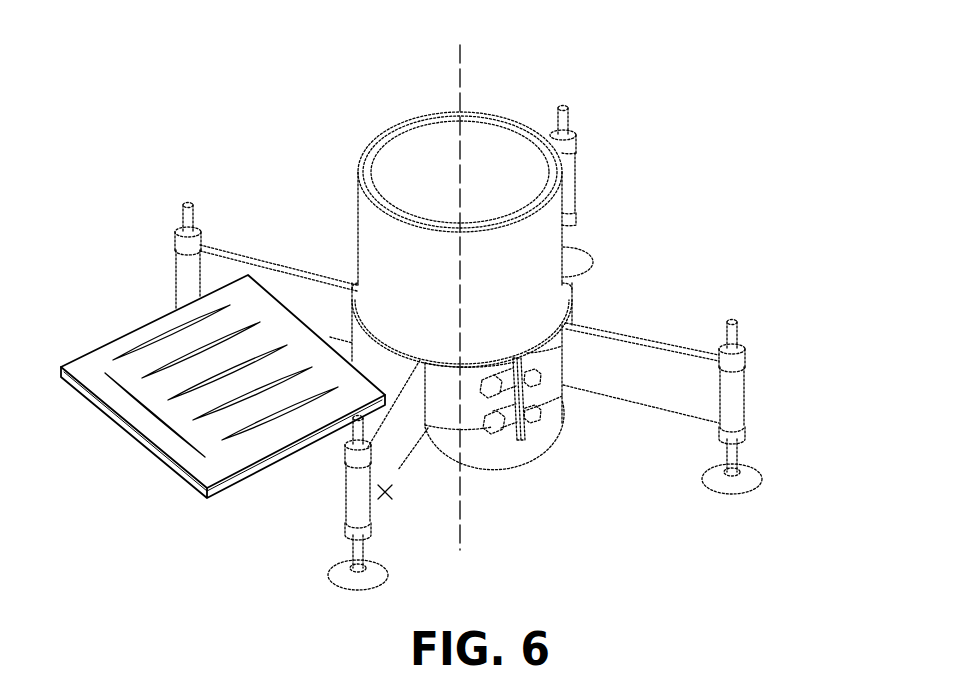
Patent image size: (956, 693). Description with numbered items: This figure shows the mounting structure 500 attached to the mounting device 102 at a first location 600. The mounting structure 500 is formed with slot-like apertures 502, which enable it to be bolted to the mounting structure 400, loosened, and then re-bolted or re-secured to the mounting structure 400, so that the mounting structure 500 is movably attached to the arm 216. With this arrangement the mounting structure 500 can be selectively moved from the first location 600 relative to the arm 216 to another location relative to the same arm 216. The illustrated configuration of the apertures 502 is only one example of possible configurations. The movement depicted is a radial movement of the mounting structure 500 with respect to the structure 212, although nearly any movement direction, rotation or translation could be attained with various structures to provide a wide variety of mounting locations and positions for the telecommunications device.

The apparatus 102 is at (660, 133).
The canister body 212 is at (492, 113).
The adjustable leg 216 is at (383, 477).
The support frame 400 is at (292, 283).
The tray plate 500 is at (186, 488).
The slot 502 is at (280, 422).
The tray assembly 600 is at (150, 281).